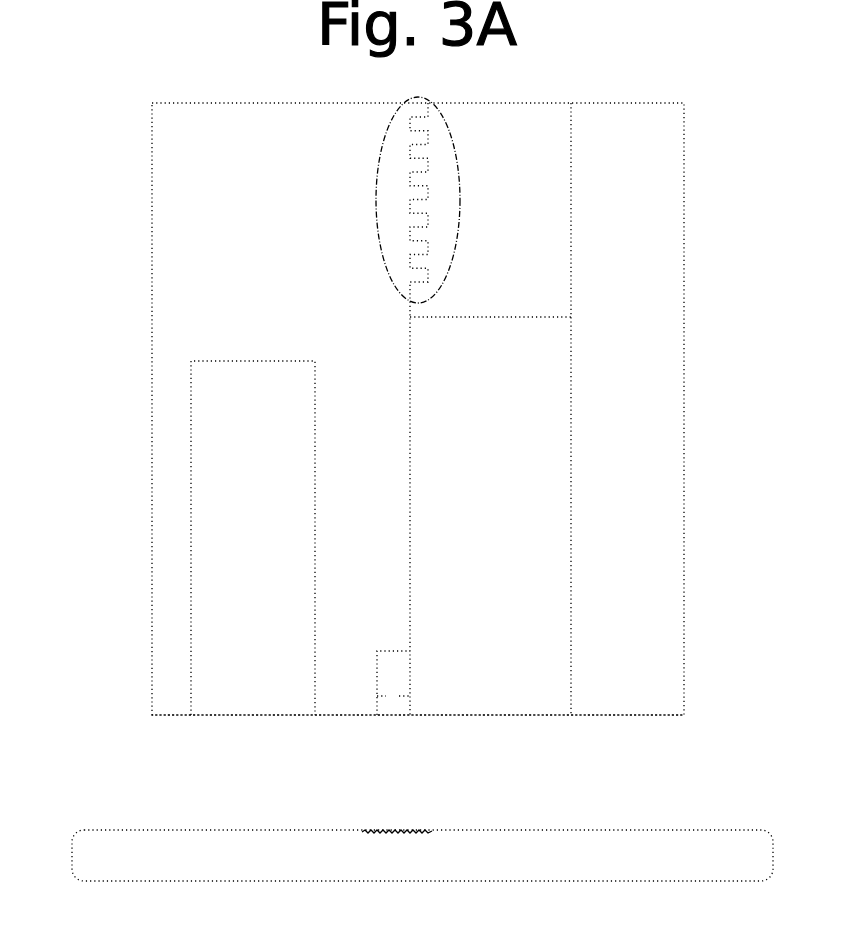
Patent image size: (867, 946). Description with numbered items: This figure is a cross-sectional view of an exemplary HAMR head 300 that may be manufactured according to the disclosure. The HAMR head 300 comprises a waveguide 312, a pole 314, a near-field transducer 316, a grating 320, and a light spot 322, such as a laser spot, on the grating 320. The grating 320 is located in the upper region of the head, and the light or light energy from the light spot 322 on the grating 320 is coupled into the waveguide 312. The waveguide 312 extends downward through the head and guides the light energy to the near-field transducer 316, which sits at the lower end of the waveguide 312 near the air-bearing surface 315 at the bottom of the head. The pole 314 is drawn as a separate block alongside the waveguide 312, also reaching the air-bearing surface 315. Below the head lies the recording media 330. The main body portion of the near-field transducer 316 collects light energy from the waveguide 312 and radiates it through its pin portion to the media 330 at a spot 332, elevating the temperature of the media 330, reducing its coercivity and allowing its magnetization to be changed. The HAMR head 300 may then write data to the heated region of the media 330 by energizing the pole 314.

The HAMR head 300 is at (700, 411).
The waveguide 312 is at (437, 397).
The pole 314 is at (253, 538).
The air-bearing surface 315 is at (145, 722).
The near-field transducer 316 is at (392, 651).
The grating 320 is at (503, 135).
The light spot 322 is at (378, 200).
The media 330 is at (473, 875).
The spot 332 is at (400, 832).